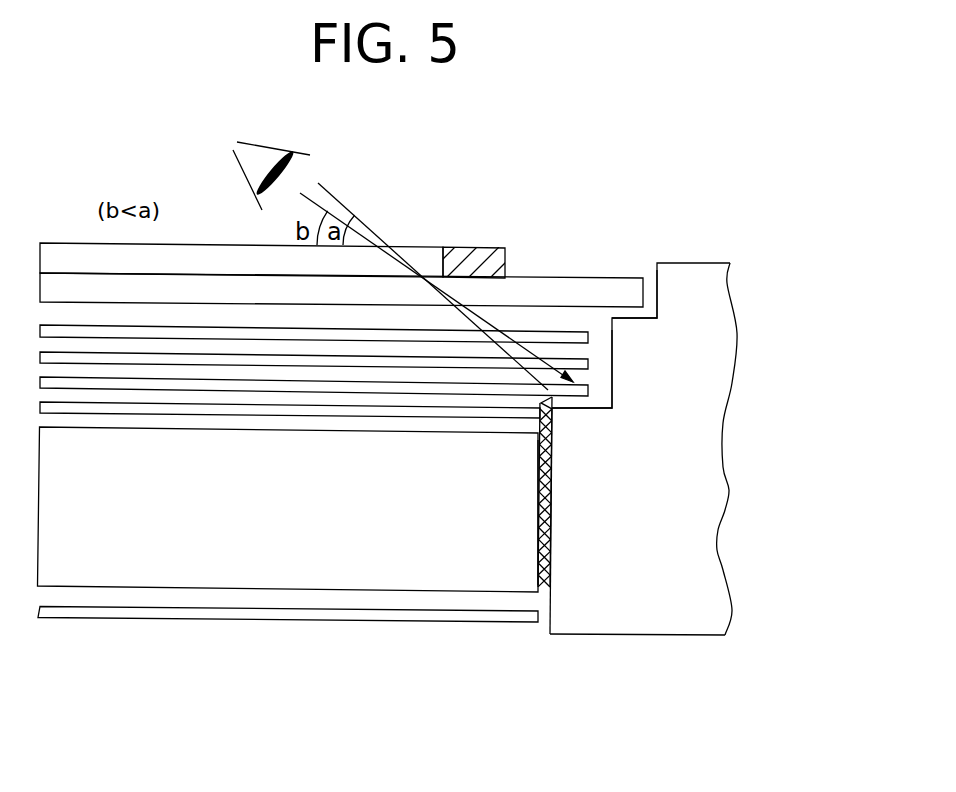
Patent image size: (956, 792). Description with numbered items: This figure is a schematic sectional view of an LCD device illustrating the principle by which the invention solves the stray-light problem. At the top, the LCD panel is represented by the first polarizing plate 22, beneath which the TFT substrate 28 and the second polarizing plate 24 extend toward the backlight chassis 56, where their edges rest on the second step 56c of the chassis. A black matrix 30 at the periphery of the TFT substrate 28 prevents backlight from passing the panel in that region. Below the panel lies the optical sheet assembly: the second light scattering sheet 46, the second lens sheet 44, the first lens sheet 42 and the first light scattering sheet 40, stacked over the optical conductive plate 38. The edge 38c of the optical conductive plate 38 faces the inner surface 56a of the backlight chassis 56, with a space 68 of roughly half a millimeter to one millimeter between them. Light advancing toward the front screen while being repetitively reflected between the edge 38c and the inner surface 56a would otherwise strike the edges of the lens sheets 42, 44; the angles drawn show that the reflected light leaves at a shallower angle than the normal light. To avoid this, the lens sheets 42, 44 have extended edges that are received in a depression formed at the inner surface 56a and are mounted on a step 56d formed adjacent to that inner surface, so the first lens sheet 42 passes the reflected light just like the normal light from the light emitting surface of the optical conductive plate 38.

The first polarizing plate 22 is at (419, 246).
The black matrix 30 is at (467, 248).
The second polarizing plate 24 is at (341, 255).
The TFT substrate 28 is at (572, 288).
The second step 56c is at (625, 317).
The second light scattering sheet 46 is at (588, 337).
The second lens sheet 44 is at (588, 365).
The first lens sheet 42 is at (588, 392).
The step 56d is at (583, 411).
The first light scattering sheet 40 is at (535, 414).
The backlight chassis 56 is at (680, 435).
The optical conductive plate 38 is at (288, 565).
The edge of optical conductive plate 38c is at (537, 517).
The inner surface 56a is at (555, 515).
The space 68 is at (545, 638).